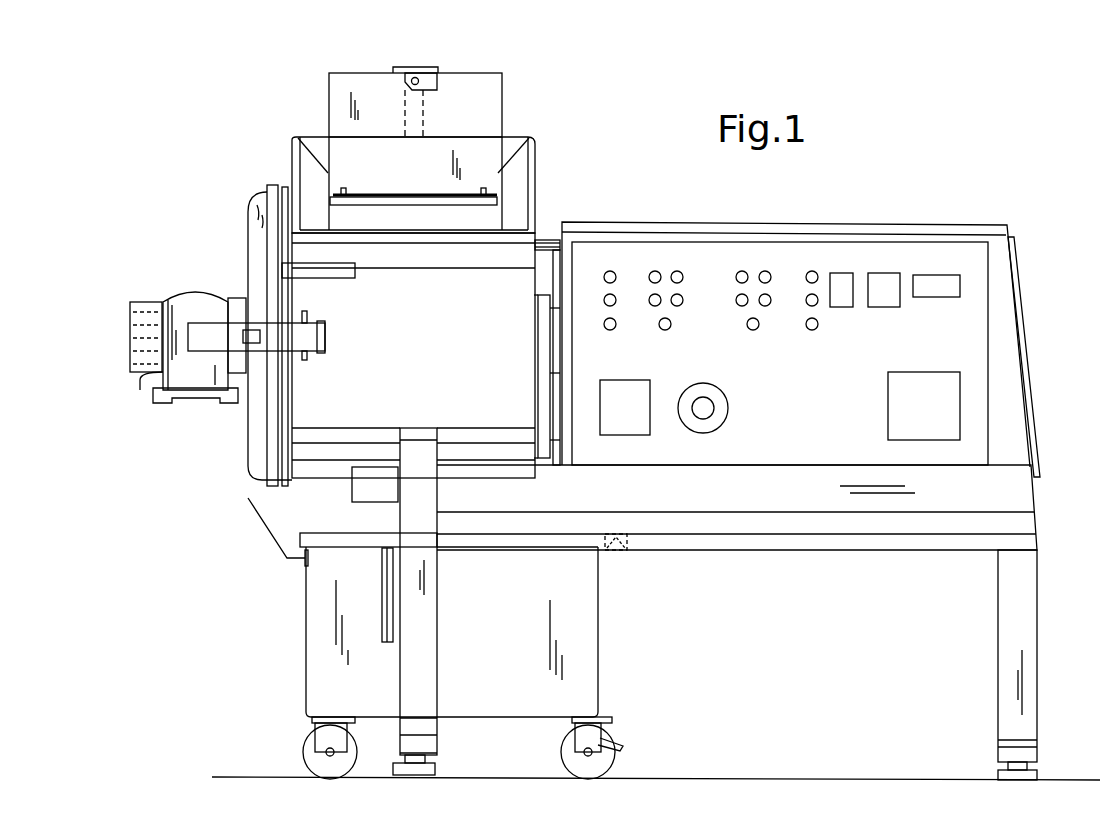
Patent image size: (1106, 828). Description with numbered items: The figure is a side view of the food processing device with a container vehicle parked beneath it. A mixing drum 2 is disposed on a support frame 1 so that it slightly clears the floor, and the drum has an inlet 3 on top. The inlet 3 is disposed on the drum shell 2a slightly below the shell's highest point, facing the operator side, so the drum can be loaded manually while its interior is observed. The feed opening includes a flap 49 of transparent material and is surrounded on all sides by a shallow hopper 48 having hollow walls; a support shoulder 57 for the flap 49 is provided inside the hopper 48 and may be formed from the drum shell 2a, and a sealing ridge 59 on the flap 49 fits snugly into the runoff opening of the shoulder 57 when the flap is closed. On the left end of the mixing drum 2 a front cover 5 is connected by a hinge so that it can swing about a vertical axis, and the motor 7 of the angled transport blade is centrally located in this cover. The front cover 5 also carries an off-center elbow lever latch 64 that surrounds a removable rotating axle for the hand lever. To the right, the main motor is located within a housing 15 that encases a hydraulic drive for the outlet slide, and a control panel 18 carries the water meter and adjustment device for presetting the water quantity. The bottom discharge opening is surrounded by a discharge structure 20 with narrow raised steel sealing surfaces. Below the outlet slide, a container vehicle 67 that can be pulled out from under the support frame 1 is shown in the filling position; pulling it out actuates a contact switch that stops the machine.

The support frame 1 is at (1016, 502).
The mixing drum 2 is at (220, 489).
The drum shell 2a is at (448, 386).
The inlet 3 is at (522, 110).
The front cover 5 is at (252, 215).
The motor 7 is at (190, 305).
The housing 15 is at (997, 291).
The control panel 18 is at (808, 414).
The discharge structure 20 is at (372, 486).
The hopper 48 is at (533, 168).
The flap 49 is at (338, 97).
The support shoulder 57 is at (500, 215).
The sealing ridge 59 is at (400, 68).
The elbow lever latch 64 is at (305, 343).
The container vehicle 67 is at (493, 634).